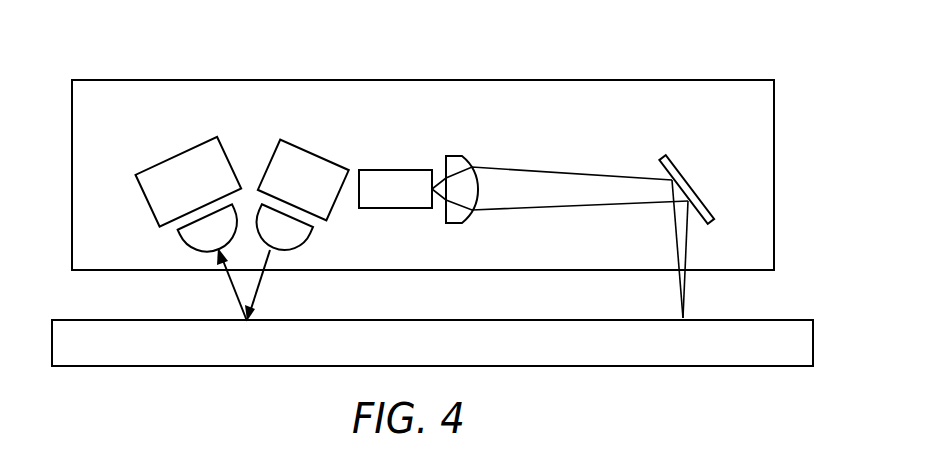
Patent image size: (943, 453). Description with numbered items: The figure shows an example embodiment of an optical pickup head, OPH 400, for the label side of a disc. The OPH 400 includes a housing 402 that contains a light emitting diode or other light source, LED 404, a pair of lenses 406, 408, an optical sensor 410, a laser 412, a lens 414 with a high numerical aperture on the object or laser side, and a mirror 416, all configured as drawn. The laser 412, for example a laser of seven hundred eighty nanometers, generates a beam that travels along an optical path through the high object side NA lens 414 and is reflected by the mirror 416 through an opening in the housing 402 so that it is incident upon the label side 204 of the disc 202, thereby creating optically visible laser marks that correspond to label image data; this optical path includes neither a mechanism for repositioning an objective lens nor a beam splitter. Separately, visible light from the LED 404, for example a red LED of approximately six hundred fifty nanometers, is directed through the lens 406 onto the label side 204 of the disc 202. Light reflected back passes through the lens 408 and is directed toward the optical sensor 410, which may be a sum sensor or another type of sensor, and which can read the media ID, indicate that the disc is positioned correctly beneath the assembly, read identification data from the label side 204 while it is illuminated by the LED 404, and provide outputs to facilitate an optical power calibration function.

The OPH 400 is at (160, 47).
The housing 402 is at (542, 80).
The light emitting diode (LED) or other light source 404 is at (316, 150).
The lens 406 is at (310, 227).
The lens 408 is at (180, 230).
The optical sensor 410 is at (178, 157).
The laser 412 is at (395, 208).
The lens with a high numerical aperture (NA) 414 is at (453, 223).
The mirror 416 is at (665, 154).
The disc 202 is at (492, 348).
The label side 204 is at (539, 320).